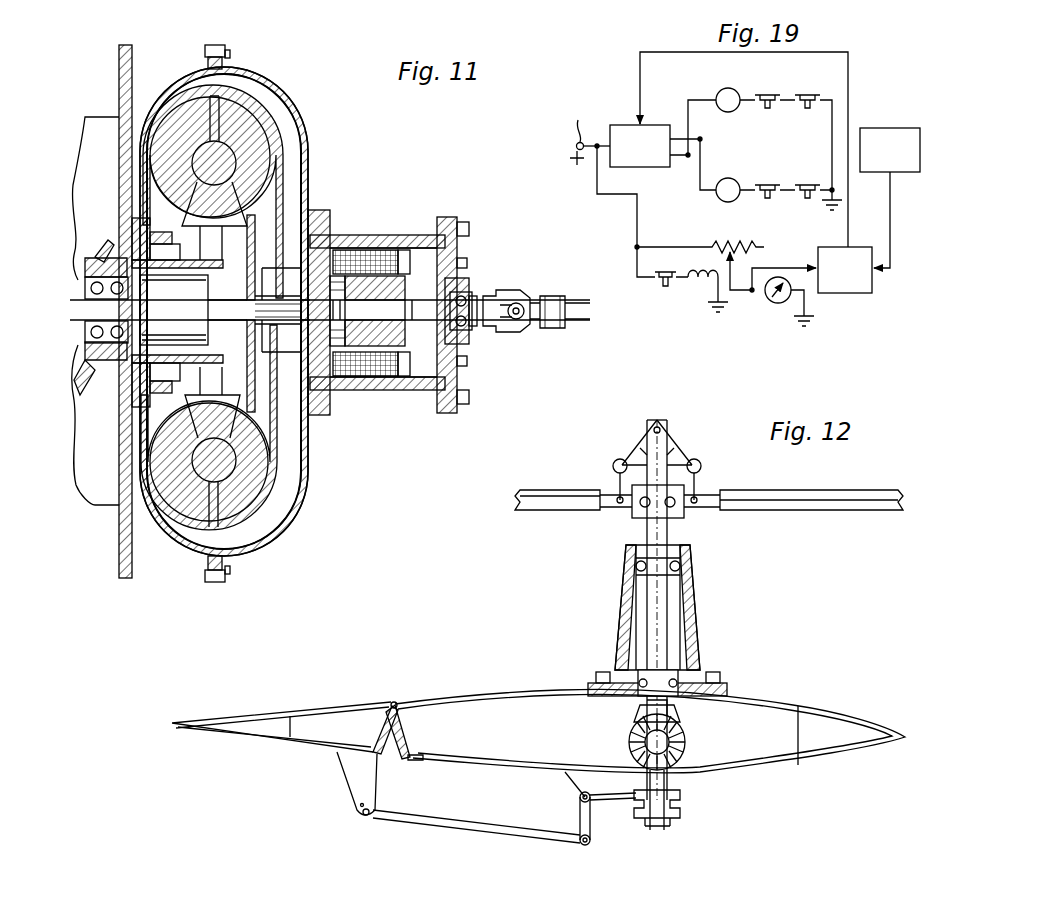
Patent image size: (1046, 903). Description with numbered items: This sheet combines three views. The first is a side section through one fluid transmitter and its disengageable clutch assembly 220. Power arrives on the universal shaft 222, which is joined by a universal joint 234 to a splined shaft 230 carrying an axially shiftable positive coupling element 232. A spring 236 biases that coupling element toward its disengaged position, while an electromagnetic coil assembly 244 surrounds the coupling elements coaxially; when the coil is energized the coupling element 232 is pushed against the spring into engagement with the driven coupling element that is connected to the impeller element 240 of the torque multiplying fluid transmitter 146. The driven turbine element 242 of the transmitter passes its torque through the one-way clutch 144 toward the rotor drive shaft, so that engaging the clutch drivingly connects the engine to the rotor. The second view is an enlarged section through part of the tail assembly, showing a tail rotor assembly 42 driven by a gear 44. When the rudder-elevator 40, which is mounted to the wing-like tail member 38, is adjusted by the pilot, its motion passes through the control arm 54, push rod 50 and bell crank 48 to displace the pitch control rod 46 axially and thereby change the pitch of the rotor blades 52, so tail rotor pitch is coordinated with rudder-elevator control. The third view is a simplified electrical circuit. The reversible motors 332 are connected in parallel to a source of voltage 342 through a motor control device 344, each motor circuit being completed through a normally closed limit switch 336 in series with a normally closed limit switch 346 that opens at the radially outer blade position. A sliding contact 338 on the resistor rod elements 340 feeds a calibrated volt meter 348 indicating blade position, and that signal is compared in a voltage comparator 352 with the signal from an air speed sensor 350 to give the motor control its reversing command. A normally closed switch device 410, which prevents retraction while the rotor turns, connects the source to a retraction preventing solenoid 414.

In FIG. 11, the torque multiplying fluid transmitter 146 is at (277, 80).
In FIG. 11, the impeller element 240 is at (188, 133).
In FIG. 11, the driven turbine element 242 is at (257, 152).
In FIG. 11, the one-way clutch 144 is at (160, 298).
In FIG. 11, the disengageable clutch assembly 220 is at (398, 232).
In FIG. 11, the positive coupling element 232 is at (360, 262).
In FIG. 11, the splined shaft 230 is at (423, 313).
In FIG. 11, the spring 236 is at (370, 348).
In FIG. 11, the electromagnetic coil assembly 244 is at (405, 378).
In FIG. 11, the universal joint 234 is at (516, 342).
In FIG. 11, the universal shaft 222 is at (578, 320).
In FIG. 19, the motor control device 344 is at (656, 125).
In FIG. 19, the source of voltage 342 is at (586, 129).
In FIG. 19, the reversible motors 332 is at (730, 90).
In FIG. 19, the normally closed limit switch 336 is at (791, 134).
In FIG. 19, the normally closed limit switch 346 is at (805, 95).
In FIG. 19, the air speed sensor 350 is at (890, 128).
In FIG. 19, the voltage comparator 352 is at (855, 293).
In FIG. 19, the resistor rod elements 340 is at (718, 240).
In FIG. 19, the limit switch device 410 is at (668, 272).
In FIG. 19, the retraction preventing solenoid 414 is at (705, 284).
In FIG. 19, the sliding contact 338 is at (730, 268).
In FIG. 19, the volt meter 348 is at (778, 303).
In FIG. 12, the tail rotor assembly 42 is at (572, 518).
In FIG. 12, the rotor blades 52 is at (792, 504).
In FIG. 12, the wing 38 is at (472, 692).
In FIG. 12, the rudder-elevator 40 is at (268, 712).
In FIG. 12, the gear 44 is at (632, 714).
In FIG. 12, the pitch control rod 46 is at (688, 744).
In FIG. 12, the bell crank 48 is at (615, 797).
In FIG. 12, the push rod 50 is at (430, 825).
In FIG. 12, the control arm 54 is at (356, 765).